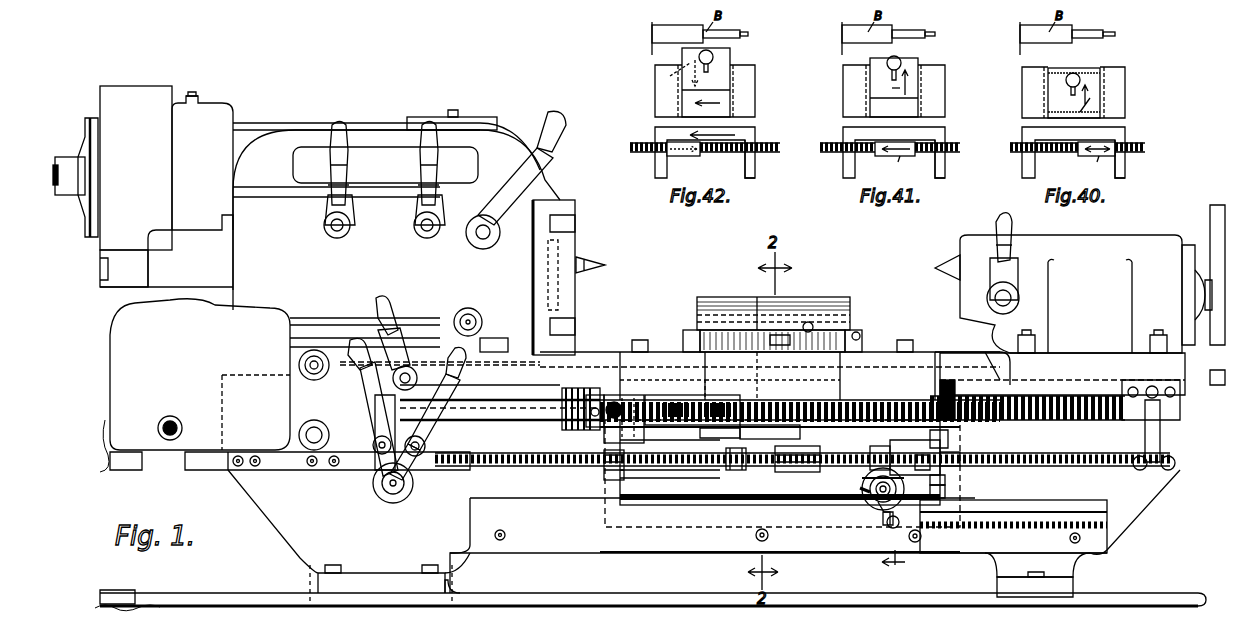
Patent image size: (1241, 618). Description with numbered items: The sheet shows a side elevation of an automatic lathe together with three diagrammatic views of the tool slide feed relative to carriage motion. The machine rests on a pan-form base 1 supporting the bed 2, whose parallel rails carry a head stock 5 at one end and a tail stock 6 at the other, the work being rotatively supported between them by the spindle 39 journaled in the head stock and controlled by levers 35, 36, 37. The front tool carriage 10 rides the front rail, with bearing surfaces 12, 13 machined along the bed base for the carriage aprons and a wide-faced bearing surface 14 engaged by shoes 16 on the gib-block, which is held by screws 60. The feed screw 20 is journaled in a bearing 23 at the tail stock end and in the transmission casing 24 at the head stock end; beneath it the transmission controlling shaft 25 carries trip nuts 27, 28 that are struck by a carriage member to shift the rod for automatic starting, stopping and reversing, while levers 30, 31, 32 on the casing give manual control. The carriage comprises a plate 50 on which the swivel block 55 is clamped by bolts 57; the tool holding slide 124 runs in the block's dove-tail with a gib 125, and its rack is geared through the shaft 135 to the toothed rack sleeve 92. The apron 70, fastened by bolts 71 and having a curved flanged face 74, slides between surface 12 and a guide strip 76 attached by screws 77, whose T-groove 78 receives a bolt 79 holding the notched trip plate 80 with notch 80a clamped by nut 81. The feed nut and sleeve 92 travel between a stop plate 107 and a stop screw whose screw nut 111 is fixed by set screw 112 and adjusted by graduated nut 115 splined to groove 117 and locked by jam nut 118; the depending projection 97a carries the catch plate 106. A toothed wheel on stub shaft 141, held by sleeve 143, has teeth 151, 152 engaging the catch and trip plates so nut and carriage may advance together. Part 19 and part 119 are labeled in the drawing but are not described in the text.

In FIG. 1, the base 1 is at (583, 604).
In FIG. 1, the bed 2 is at (1148, 508).
In FIG. 1, the head stock 5 is at (540, 215).
In FIG. 1, the tail stock 6 is at (1095, 248).
In FIG. 1, the tool carriage 10 is at (925, 352).
In FIG. 1, the bearing surface 12 is at (1090, 505).
In FIG. 1, the bearing surface 13 is at (1062, 411).
In FIG. 1, the bearing surface 14 is at (950, 440).
In FIG. 1, the shoes 16 is at (880, 455).
In FIG. 1, the collar 19 is at (925, 452).
In FIG. 1, the feed screw 20 is at (524, 425).
In FIG. 42, the feed screw 20 is at (777, 145).
In FIG. 41, the feed screw 20 is at (957, 150).
In FIG. 40, the feed screw 20 is at (1145, 145).
In FIG. 1, the bearing 23 is at (1047, 410).
In FIG. 1, the transmission casing 24 is at (292, 318).
In FIG. 1, the transmission controlling shaft 25 is at (802, 464).
In FIG. 1, the nut 27 is at (735, 470).
In FIG. 1, the nut 28 is at (962, 452).
In FIG. 1, the lever 30 is at (372, 418).
In FIG. 1, the lever 31 is at (433, 440).
In FIG. 1, the lever 32 is at (402, 340).
In FIG. 1, the lever 35 is at (543, 160).
In FIG. 1, the lever 36 is at (439, 168).
In FIG. 1, the lever 37 is at (348, 166).
In FIG. 1, the spindle 39 is at (588, 258).
In FIG. 1, the carriage plate 50 is at (655, 352).
In FIG. 42, the carriage plate 50 is at (750, 90).
In FIG. 41, the carriage plate 50 is at (938, 94).
In FIG. 40, the carriage plate 50 is at (1128, 84).
In FIG. 1, the swivel block 55 is at (862, 333).
In FIG. 1, the bolts 57 is at (690, 330).
In FIG. 1, the screws 60 is at (575, 402).
In FIG. 1, the apron 70 is at (695, 508).
In FIG. 42, the apron 70 is at (757, 166).
In FIG. 41, the apron 70 is at (942, 175).
In FIG. 40, the apron 70 is at (1127, 170).
In FIG. 1, the bolts 71 is at (878, 389).
In FIG. 1, the flanged front face 74 is at (645, 480).
In FIG. 1, the guide strip 76 is at (696, 548).
In FIG. 1, the screws 77 is at (504, 532).
In FIG. 1, the T-groove 78 is at (1005, 512).
In FIG. 1, the bolt 79 is at (878, 530).
In FIG. 1, the trip plate 80 is at (880, 505).
In FIG. 1, the notch 80a is at (878, 515).
In FIG. 1, the nut 81 is at (922, 532).
In FIG. 1, the rack sleeve 92 is at (720, 440).
In FIG. 42, the rack sleeve 92 is at (668, 158).
In FIG. 41, the rack sleeve 92 is at (908, 156).
In FIG. 40, the rack sleeve 92 is at (1080, 156).
In FIG. 1, the depending projection 97a is at (792, 470).
In FIG. 1, the catch plate 106 is at (828, 462).
In FIG. 1, the stop plate 107 is at (952, 389).
In FIG. 1, the screw nut 111 is at (665, 428).
In FIG. 1, the set screw 112 is at (630, 425).
In FIG. 1, the stop screw adjusting nut 115 is at (602, 467).
In FIG. 1, the groove 117 is at (860, 490).
In FIG. 1, the jam nut 118 is at (590, 425).
In FIG. 1, the block 119 is at (770, 335).
In FIG. 1, the tool holding slide 124 is at (810, 300).
In FIG. 42, the tool holding slide 124 is at (735, 63).
In FIG. 41, the tool holding slide 124 is at (910, 87).
In FIG. 40, the tool holding slide 124 is at (1053, 90).
In FIG. 1, the gib 125 is at (815, 323).
In FIG. 1, the shaft 135 is at (783, 377).
In FIG. 1, the stub shaft 141 is at (848, 518).
In FIG. 1, the sleeve 143 is at (946, 495).
In FIG. 1, the tooth 151 is at (946, 482).
In FIG. 1, the tooth 152 is at (800, 527).